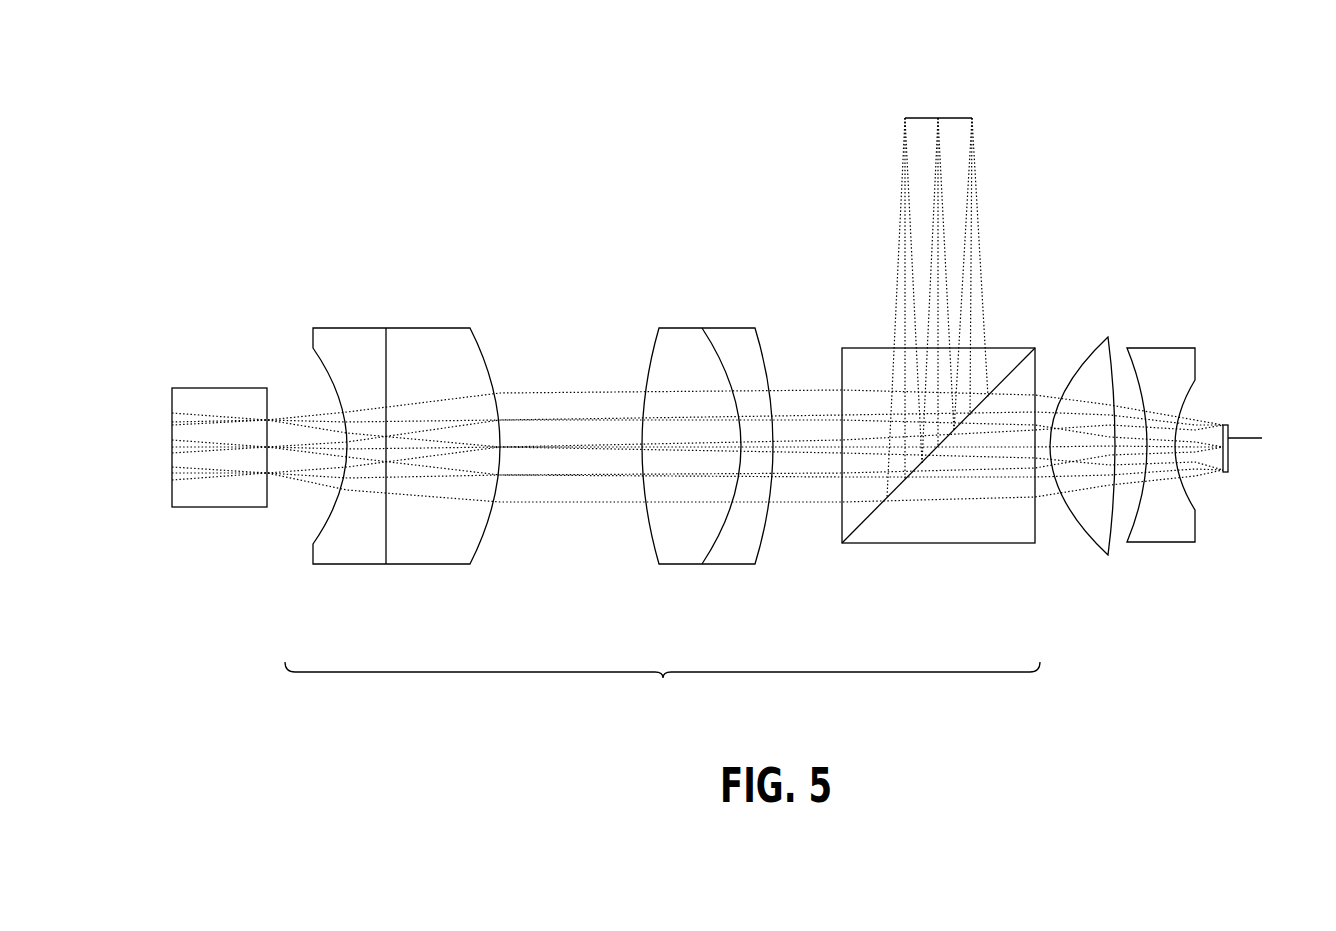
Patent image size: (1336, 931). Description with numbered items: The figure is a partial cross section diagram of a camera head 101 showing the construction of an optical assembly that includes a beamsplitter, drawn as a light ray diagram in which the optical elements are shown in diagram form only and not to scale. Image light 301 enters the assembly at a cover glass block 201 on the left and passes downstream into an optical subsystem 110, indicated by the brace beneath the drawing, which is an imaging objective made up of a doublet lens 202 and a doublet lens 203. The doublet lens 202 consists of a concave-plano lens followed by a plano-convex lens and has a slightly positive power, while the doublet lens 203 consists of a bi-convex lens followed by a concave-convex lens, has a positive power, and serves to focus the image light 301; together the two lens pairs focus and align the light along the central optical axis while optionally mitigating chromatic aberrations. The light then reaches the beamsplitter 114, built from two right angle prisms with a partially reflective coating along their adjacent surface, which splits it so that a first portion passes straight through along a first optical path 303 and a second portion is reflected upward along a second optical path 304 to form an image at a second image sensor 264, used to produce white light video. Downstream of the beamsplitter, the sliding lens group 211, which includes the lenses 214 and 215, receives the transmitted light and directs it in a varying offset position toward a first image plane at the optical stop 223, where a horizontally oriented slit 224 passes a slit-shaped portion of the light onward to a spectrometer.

The camera head 101 is at (440, 110).
The optical subsystem 110 is at (662, 683).
The beamsplitter 114 is at (858, 348).
The cover glass block 201 is at (198, 388).
The doublet lens 202 is at (343, 328).
The doublet lens 203 is at (685, 328).
The sliding lens group 211 is at (1143, 254).
The third lens 214 is at (1107, 337).
The fourth lens 215 is at (1167, 348).
The optical stop 223 is at (1223, 425).
The slit 224 is at (1262, 438).
The second image sensor 264 is at (950, 118).
The image light 301 is at (520, 354).
The first optical path 303 is at (1049, 507).
The second optical path 304 is at (986, 213).